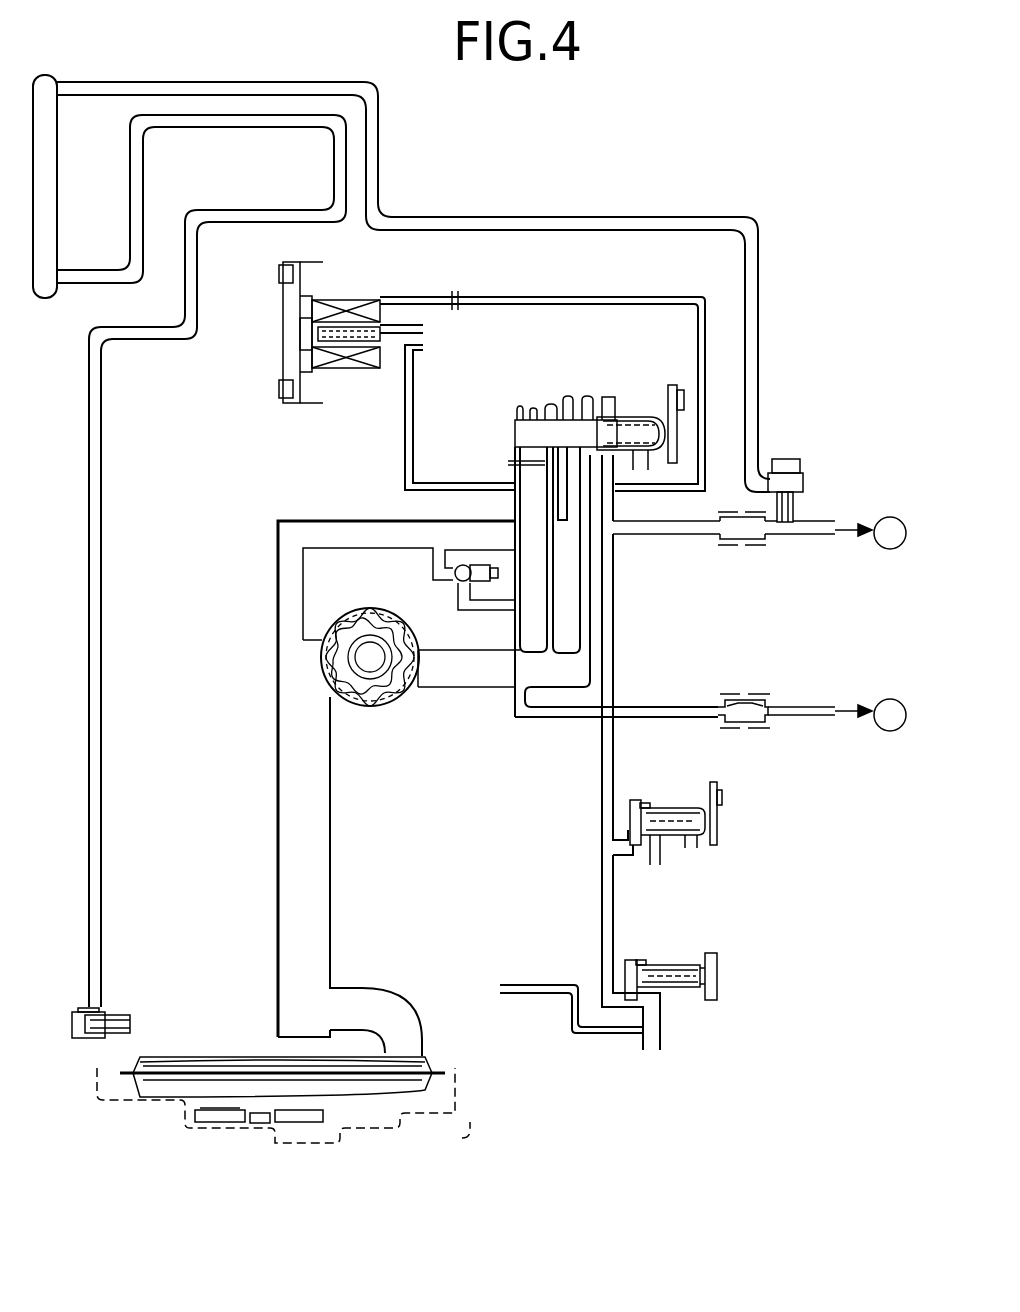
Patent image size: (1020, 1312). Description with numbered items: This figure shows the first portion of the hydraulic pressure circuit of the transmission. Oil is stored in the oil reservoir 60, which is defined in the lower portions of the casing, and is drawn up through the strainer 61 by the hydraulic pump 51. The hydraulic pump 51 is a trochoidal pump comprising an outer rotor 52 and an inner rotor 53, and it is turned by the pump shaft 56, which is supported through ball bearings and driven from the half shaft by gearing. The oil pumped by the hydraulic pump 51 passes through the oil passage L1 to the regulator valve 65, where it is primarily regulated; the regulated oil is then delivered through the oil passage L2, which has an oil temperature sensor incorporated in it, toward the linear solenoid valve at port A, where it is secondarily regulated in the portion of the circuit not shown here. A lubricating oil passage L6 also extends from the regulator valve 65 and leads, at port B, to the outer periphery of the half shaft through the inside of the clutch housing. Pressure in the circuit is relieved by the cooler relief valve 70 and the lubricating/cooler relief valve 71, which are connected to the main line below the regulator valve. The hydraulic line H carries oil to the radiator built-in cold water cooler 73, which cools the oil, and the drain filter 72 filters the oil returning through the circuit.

The radiator built-in cold water cooler 73 is at (62, 72).
The drain filter 72 is at (331, 410).
The regulator valve 65 is at (575, 387).
The hydraulic pump 51 is at (411, 667).
The outer rotor 52 is at (369, 614).
The inner rotor 53 is at (352, 622).
The pump shaft 56 is at (380, 656).
The strainer 61 is at (225, 1058).
The oil reservoir 60 is at (462, 1140).
The cooler relief valve 70 is at (691, 860).
The lubricating/cooler relief valve 71 is at (691, 1012).
The oil passage L1 is at (317, 857).
The oil passage L2 is at (652, 705).
The lubricating oil passage L6 is at (662, 527).
The hydraulic line H is at (776, 384).
The port A is at (890, 715).
The port B is at (890, 533).